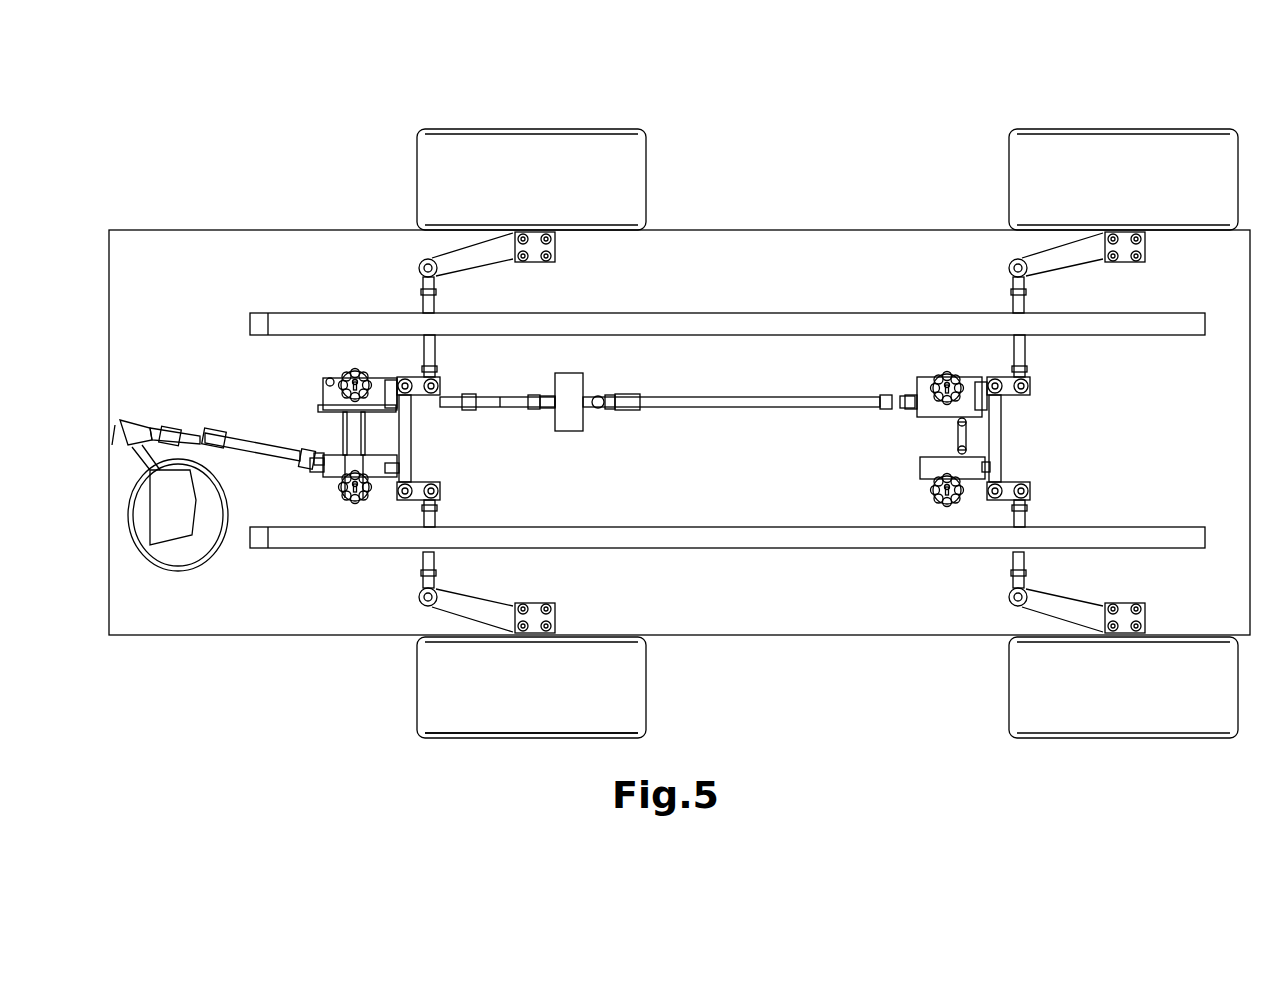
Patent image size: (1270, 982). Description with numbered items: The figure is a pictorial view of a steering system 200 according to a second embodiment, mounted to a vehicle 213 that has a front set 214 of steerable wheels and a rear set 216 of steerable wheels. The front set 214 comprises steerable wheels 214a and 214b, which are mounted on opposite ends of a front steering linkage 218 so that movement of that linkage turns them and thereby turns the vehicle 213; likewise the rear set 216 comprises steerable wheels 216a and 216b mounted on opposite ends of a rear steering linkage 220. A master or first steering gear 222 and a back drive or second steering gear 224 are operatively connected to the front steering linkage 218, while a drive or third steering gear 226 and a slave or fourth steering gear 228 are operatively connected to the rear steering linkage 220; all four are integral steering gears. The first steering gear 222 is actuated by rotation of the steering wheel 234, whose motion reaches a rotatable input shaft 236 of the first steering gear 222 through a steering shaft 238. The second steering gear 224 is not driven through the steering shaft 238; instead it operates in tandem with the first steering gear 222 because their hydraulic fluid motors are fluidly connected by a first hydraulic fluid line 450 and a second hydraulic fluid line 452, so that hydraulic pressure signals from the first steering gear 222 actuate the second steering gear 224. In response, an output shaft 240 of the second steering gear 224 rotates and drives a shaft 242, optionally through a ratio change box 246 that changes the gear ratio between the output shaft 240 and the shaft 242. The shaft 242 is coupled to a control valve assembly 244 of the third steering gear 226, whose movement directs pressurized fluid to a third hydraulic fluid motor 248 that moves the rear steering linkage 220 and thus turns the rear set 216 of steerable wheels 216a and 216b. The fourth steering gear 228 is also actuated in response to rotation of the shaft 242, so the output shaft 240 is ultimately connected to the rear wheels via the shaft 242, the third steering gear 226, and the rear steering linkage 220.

The steering system 200 is at (812, 97).
The vehicle 213 is at (176, 228).
The front set of steerable wheels 214 is at (538, 425).
The steerable wheel 214a is at (474, 158).
The steerable wheel 214b is at (477, 700).
The rear set of steerable wheels 216 is at (1123, 422).
The steerable wheel 216a is at (1083, 160).
The steerable wheel 216b is at (1103, 700).
The front steering linkage 218 is at (437, 523).
The rear steering linkage 220 is at (1025, 523).
The first steering gear 222 is at (330, 480).
The second steering gear 224 is at (322, 390).
The third steering gear 226 is at (925, 393).
The fourth steering gear 228 is at (920, 476).
The steering wheel 234 is at (182, 568).
The input shaft 236 is at (323, 458).
The steering shaft 238 is at (243, 435).
The output shaft 240 is at (392, 393).
The shaft 242 is at (722, 398).
The control valve assembly 244 is at (927, 412).
The ratio change box 246 is at (565, 412).
The third hydraulic fluid motor 248 is at (975, 375).
The first hydraulic fluid line 450 is at (346, 500).
The second hydraulic fluid line 452 is at (374, 498).